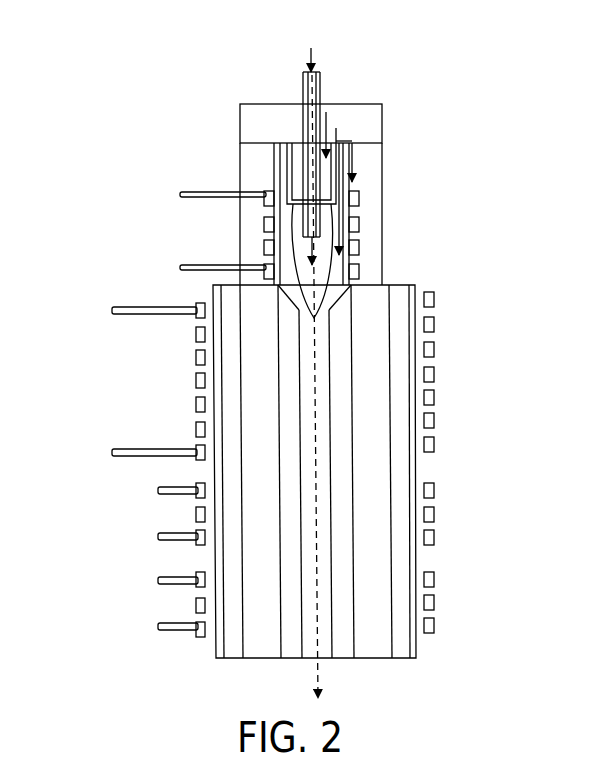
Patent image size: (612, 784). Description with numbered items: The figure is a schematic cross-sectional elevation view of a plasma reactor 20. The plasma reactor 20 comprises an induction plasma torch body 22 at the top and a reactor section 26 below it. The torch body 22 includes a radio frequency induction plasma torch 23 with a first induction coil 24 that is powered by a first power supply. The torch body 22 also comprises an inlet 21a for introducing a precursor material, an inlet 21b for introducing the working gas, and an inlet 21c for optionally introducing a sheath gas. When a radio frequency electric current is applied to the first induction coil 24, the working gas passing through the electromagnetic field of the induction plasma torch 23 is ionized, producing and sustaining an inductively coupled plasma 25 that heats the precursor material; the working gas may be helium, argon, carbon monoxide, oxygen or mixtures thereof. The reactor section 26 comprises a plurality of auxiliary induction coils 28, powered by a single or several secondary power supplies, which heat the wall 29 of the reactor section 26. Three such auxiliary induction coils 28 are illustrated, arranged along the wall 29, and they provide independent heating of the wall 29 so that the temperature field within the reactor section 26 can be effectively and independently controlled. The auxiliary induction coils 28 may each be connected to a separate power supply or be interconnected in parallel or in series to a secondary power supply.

The plasma reactor 20 is at (81, 136).
The inlet 21a is at (315, 63).
The inlet 21b is at (327, 117).
The inlet 21c is at (352, 141).
The torch body 22 is at (240, 168).
The induction plasma torch 23 is at (323, 220).
The first induction coil 24 is at (173, 190).
The plasma 25 is at (327, 275).
The reactor section 26 is at (422, 457).
The auxiliary induction coils 28 is at (148, 632).
The wall 29 is at (390, 570).